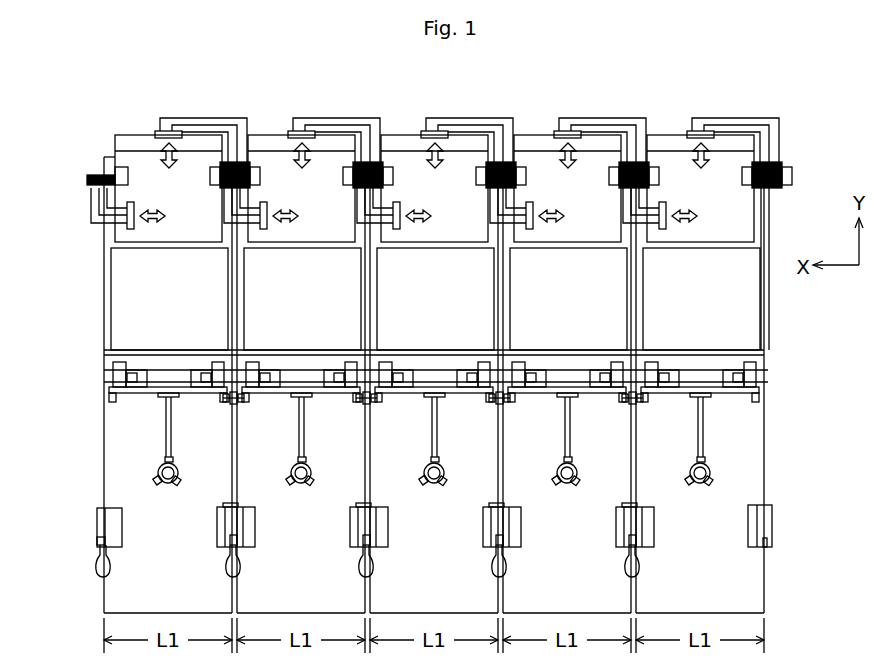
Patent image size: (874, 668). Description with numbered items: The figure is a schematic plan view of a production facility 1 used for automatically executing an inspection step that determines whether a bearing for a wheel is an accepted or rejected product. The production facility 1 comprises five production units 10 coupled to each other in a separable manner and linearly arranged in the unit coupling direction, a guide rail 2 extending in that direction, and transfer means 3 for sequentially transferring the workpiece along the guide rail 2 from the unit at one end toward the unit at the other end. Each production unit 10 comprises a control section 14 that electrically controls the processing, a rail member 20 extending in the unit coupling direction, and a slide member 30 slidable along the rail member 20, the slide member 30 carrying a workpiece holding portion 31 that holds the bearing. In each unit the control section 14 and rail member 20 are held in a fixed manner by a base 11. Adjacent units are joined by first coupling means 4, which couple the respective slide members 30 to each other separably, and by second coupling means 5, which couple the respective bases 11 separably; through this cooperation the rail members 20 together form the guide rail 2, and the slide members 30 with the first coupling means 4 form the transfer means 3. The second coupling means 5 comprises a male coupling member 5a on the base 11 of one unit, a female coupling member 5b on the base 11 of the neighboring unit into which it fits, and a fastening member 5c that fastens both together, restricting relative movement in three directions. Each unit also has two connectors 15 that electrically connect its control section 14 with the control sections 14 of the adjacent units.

The production facility 1 is at (812, 153).
The guide rail 2 is at (772, 373).
The transfer means 3 is at (100, 393).
The first coupling means 4 is at (222, 407).
The second coupling means 5 is at (214, 540).
The male coupling member 5a is at (110, 522).
The female coupling member 5b is at (773, 527).
The fastening member 5c is at (93, 570).
The production unit 10 is at (148, 134).
The base 11 is at (140, 563).
The control section 14 is at (201, 222).
The connector 15 is at (187, 118).
The rail member 20 is at (168, 376).
The slide member 30 is at (137, 396).
The workpiece holding portion 31 is at (170, 488).